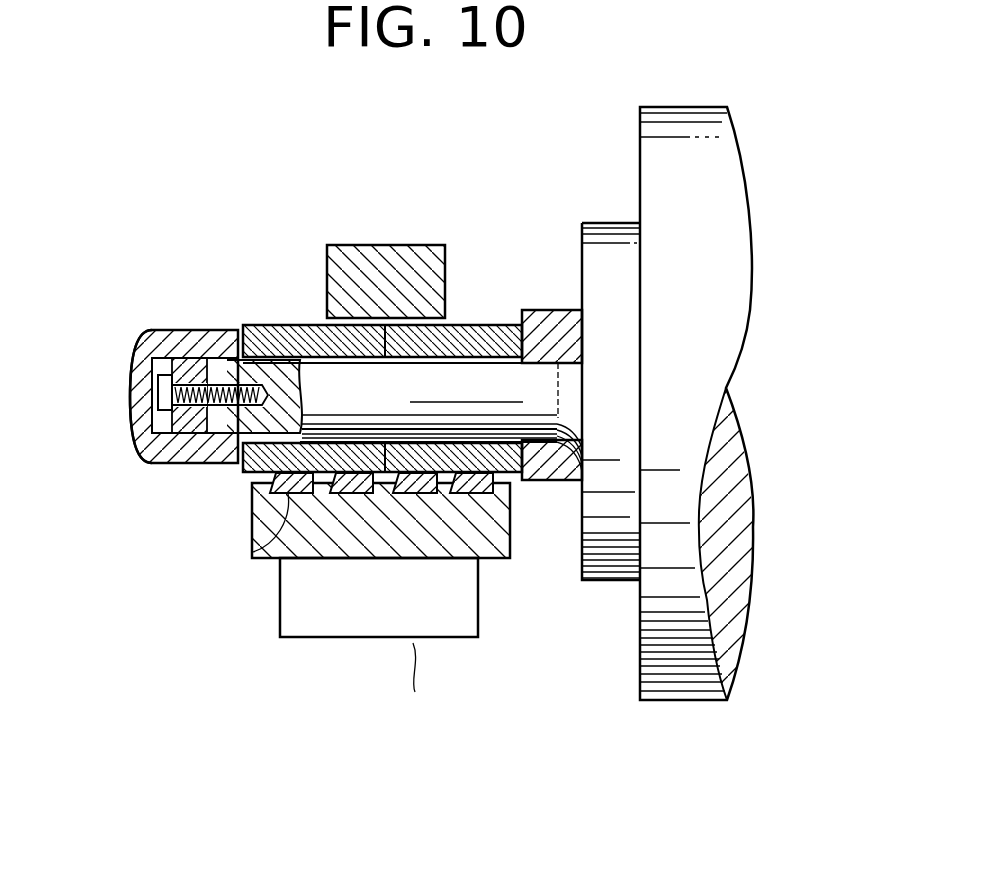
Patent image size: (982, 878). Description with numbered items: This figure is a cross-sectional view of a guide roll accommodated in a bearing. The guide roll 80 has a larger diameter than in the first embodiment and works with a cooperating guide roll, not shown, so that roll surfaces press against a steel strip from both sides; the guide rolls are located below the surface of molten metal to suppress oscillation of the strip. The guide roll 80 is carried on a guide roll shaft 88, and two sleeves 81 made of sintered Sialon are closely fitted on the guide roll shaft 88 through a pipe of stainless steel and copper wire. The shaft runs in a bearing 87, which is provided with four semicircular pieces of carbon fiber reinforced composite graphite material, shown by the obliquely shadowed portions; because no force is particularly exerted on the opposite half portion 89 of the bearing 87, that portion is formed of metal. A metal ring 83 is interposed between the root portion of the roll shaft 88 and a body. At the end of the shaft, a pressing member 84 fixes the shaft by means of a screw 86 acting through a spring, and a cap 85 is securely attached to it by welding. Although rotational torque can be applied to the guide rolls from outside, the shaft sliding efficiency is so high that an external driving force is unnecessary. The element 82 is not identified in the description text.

The guide roll 80 is at (739, 189).
The sleeve 81 is at (293, 327).
The bearing block 82 is at (252, 546).
The metal ring 83 is at (555, 312).
The pressing member 84 is at (185, 335).
The cap 85 is at (130, 400).
The screw 86 is at (223, 465).
The bearing 87 is at (265, 642).
The guide roll shaft 88 is at (467, 377).
The opposite half portion 89 is at (382, 245).